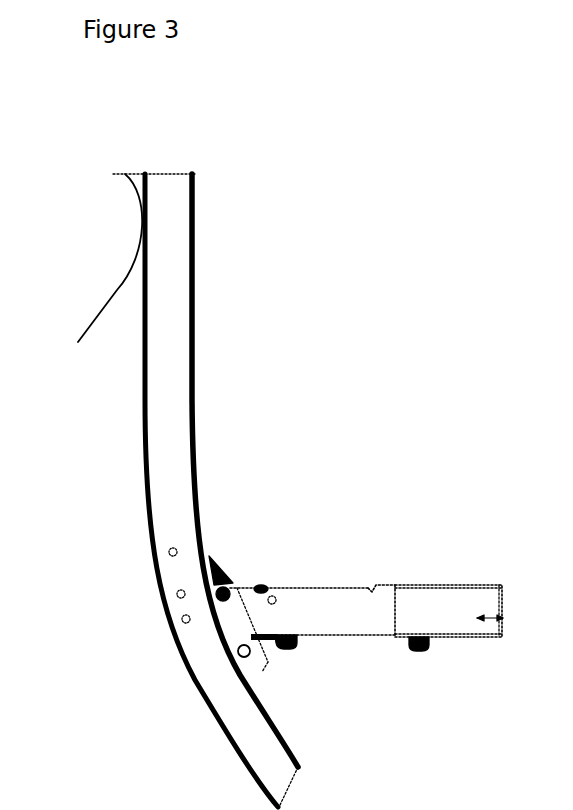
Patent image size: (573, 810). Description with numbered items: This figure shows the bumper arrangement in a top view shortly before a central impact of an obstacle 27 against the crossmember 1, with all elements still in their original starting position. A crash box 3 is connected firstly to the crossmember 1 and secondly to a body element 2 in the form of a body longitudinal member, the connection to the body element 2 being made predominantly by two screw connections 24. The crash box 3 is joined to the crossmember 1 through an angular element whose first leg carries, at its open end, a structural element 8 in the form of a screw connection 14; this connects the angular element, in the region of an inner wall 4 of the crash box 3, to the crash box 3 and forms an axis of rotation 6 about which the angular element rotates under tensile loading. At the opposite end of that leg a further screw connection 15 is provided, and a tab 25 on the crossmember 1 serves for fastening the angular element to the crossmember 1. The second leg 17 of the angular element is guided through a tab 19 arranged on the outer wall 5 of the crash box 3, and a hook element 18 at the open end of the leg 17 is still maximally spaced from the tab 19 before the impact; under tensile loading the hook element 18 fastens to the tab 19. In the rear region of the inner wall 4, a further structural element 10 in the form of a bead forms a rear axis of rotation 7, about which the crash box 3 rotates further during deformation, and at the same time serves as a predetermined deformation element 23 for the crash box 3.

The crossmember 1 is at (158, 368).
The body element 2 is at (420, 600).
The crash box 3 is at (350, 665).
The inner wall 4 is at (310, 587).
The outer wall 5 is at (348, 627).
The axis of rotation 6 is at (298, 524).
The structural element 8 is at (298, 524).
The screw connection 14 is at (227, 590).
The rear axis of rotation 7 is at (447, 512).
The structural element 10 is at (447, 512).
The predetermined deformation element 23 is at (372, 587).
The screw connection 15 is at (240, 658).
The leg 17 is at (270, 635).
The hook element 18 is at (290, 646).
The tab 19 is at (261, 640).
The screw connections 24 is at (428, 647).
The tab 25 is at (230, 622).
The obstacle 27 is at (99, 277).